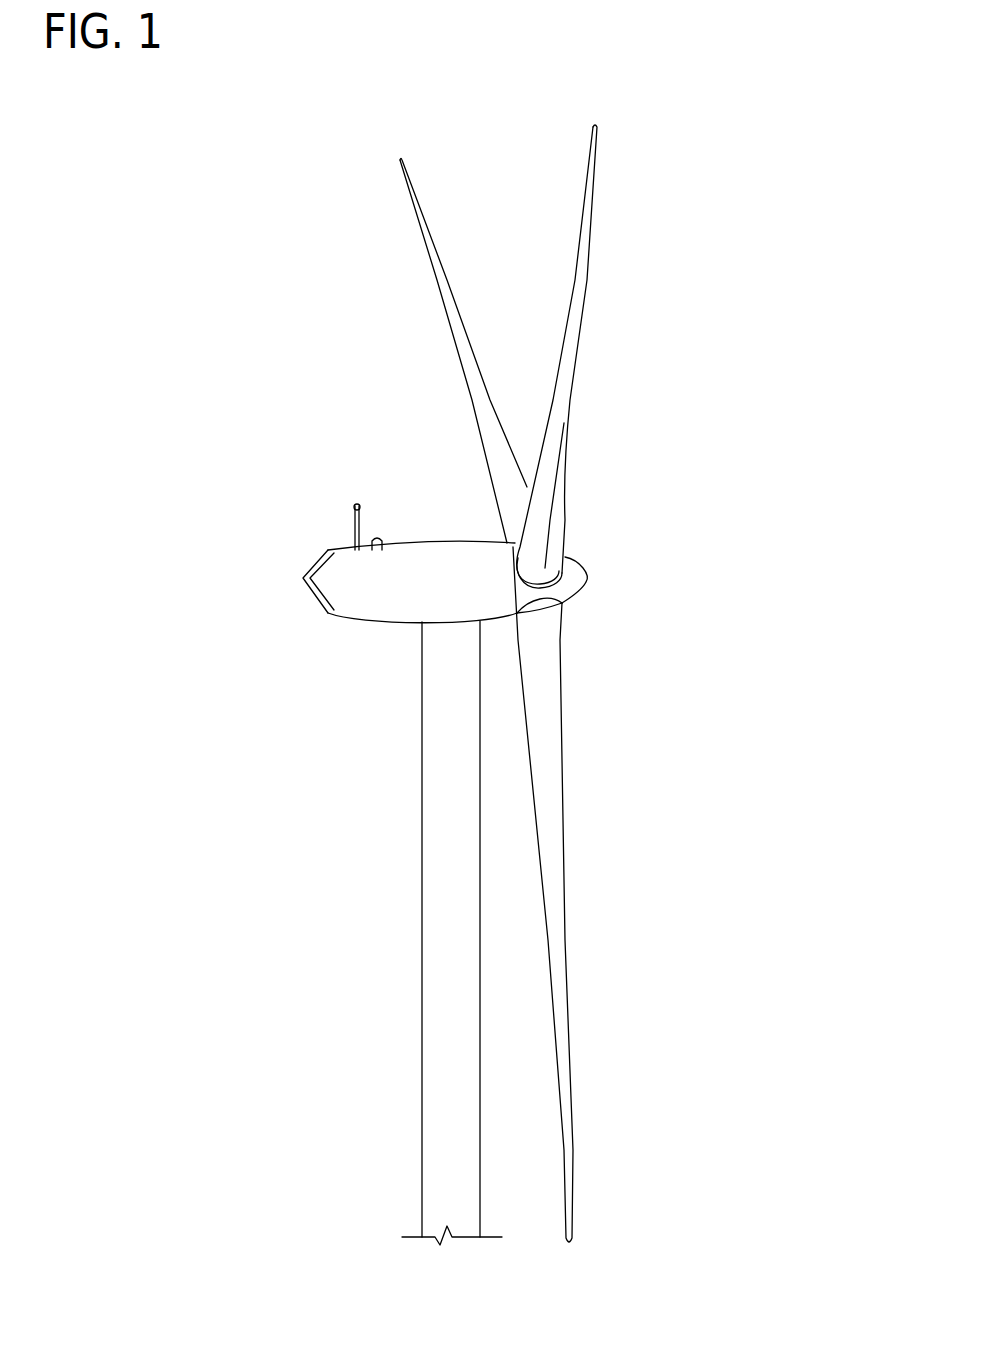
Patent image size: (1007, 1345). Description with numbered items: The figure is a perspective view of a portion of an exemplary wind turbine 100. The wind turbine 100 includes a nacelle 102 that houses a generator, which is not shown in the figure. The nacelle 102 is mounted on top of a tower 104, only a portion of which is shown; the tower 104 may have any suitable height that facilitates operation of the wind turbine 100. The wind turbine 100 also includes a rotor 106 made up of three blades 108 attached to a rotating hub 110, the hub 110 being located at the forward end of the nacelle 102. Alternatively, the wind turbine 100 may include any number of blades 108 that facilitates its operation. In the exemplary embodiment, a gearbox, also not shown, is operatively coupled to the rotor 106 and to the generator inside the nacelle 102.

The wind turbine 100 is at (294, 205).
The nacelle 102 is at (356, 619).
The tower 104 is at (422, 882).
The rotor 106 is at (638, 331).
The blades 108 is at (435, 243).
The rotating hub 110 is at (580, 583).